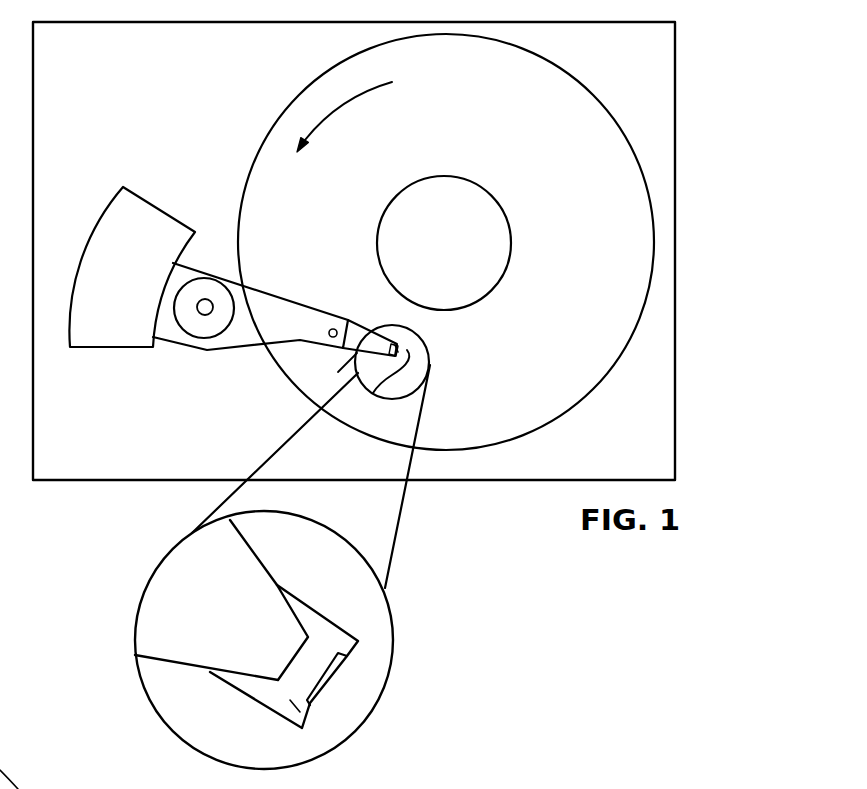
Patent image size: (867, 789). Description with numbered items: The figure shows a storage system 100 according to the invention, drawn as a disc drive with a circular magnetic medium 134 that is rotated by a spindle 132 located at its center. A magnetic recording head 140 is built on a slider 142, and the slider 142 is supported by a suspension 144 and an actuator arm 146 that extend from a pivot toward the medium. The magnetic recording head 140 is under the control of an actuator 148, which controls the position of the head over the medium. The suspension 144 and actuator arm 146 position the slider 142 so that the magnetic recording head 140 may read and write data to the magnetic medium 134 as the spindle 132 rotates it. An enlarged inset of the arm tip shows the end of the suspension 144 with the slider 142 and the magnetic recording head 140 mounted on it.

The storage system 100 is at (701, 55).
The spindle 132 is at (485, 187).
The magnetic medium 134 is at (595, 264).
The magnetic recording head 140 is at (372, 395).
The slider 142 is at (397, 348).
The suspension 144 is at (262, 343).
The actuator arm 146 is at (262, 291).
The actuator 148 is at (203, 309).